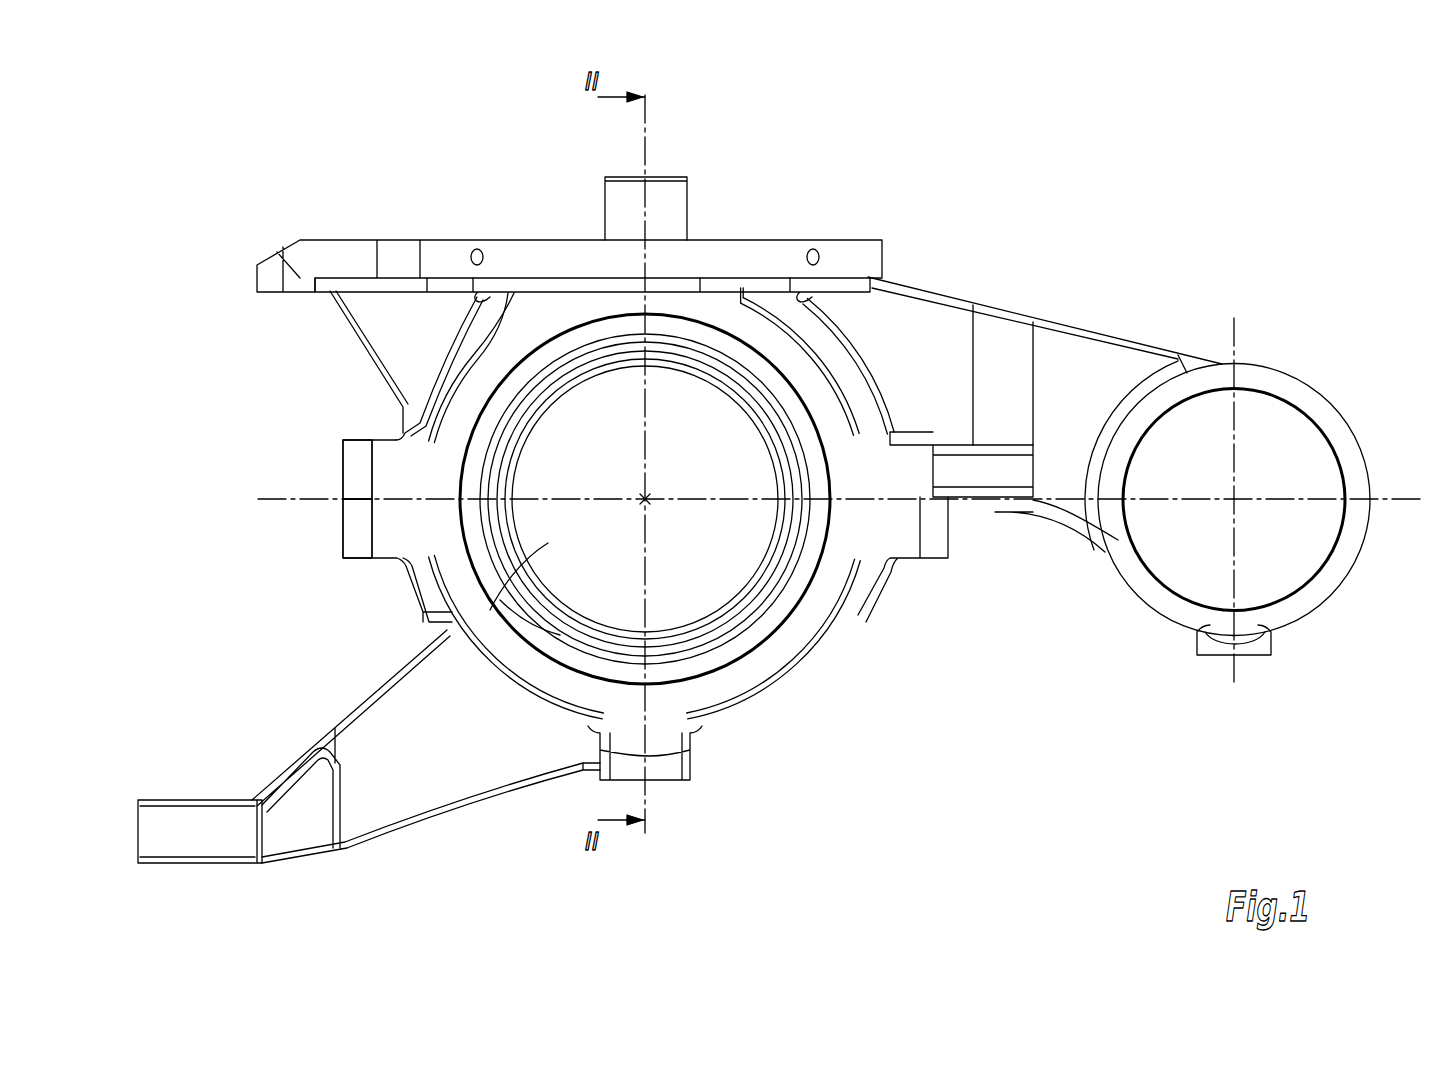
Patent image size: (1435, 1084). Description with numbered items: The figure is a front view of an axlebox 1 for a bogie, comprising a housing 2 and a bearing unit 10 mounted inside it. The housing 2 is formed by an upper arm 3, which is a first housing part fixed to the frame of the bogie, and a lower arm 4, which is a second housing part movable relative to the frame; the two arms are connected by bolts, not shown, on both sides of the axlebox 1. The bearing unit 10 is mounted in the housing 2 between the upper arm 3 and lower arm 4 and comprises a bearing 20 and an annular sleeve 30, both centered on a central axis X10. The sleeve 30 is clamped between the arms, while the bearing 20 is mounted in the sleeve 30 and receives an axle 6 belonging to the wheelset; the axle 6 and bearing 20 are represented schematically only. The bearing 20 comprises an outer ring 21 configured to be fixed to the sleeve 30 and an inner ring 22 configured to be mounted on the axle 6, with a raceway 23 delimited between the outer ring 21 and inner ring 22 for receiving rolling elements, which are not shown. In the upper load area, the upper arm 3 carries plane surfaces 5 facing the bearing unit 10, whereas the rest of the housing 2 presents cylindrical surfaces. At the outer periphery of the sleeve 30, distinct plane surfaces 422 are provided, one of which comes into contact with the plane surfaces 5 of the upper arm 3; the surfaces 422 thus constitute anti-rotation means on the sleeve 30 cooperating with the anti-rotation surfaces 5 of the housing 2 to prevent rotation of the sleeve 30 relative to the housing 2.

The axlebox 1 is at (1080, 255).
The housing 2 is at (152, 470).
The upper arm 3 is at (357, 465).
The lower arm 4 is at (357, 535).
The plane surfaces 5 is at (667, 292).
The axle 6 is at (548, 543).
The bearing unit 10 is at (947, 755).
The bearing 20 is at (893, 753).
The outer ring 21 is at (703, 647).
The inner ring 22 is at (715, 627).
The raceway 23 is at (735, 622).
The annular sleeve 30 is at (797, 635).
The plane surfaces 422 is at (600, 283).
The central axis X10 is at (667, 487).